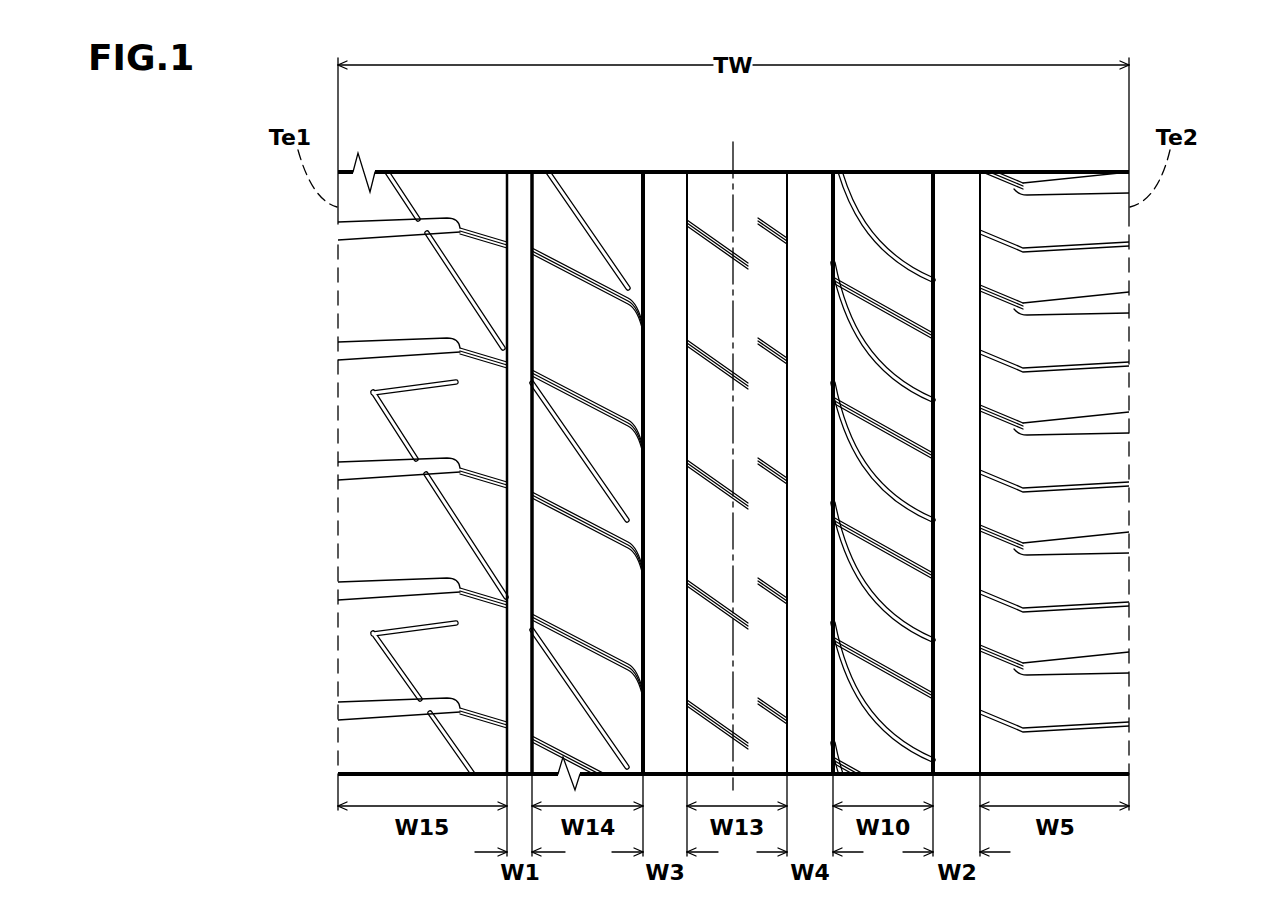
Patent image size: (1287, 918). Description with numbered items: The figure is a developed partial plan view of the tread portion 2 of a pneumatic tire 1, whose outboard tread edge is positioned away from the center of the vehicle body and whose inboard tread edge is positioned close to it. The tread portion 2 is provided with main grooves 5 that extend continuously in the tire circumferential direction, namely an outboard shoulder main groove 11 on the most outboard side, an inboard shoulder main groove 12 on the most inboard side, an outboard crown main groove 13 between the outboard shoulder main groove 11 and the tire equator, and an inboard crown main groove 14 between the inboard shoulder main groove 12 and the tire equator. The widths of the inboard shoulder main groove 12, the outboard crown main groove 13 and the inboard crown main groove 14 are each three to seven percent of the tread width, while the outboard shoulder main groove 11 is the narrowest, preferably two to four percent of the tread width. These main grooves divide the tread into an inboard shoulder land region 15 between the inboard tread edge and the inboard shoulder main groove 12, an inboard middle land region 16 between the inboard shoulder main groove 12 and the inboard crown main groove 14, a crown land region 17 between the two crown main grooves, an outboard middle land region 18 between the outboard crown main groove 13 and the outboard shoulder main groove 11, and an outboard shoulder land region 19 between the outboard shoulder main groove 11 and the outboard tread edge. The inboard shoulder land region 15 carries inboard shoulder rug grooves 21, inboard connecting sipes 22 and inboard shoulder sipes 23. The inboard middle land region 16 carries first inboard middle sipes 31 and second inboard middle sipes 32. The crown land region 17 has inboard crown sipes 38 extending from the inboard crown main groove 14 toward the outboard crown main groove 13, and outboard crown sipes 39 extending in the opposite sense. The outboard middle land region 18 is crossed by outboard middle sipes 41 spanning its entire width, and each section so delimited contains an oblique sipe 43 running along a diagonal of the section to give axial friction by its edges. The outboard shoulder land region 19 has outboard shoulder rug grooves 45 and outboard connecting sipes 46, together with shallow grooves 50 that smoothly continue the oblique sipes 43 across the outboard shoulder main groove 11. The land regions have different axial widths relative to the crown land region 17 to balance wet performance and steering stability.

The pneumatic tire 1 is at (730, 469).
The tread portion 2 is at (790, 168).
The main grooves 5 is at (524, 479).
The outboard shoulder main groove 11 is at (518, 203).
The inboard shoulder main groove 12 is at (955, 208).
The outboard crown main groove 13 is at (664, 201).
The inboard crown main groove 14 is at (810, 203).
The inboard shoulder land region 15 is at (1098, 438).
The inboard middle land region 16 is at (1024, 491).
The crown land region 17 is at (951, 446).
The outboard middle land region 18 is at (443, 461).
The outboard shoulder land region 19 is at (375, 438).
The inboard shoulder rug grooves 21 is at (1086, 305).
The inboard connecting sipes 22 is at (1006, 295).
The inboard shoulder sipes 23 is at (1063, 363).
The first inboard middle sipes 31 is at (883, 425).
The second inboard middle sipes 32 is at (899, 493).
The inboard crown sipes 38 is at (773, 587).
The outboard crown sipes 39 is at (710, 591).
The outboard middle sipes 41 is at (578, 278).
The oblique sipe 43 is at (583, 467).
The outboard shoulder rug grooves 45 is at (388, 231).
The outboard connecting sipes 46 is at (489, 602).
The shallow grooves 50 is at (396, 430).